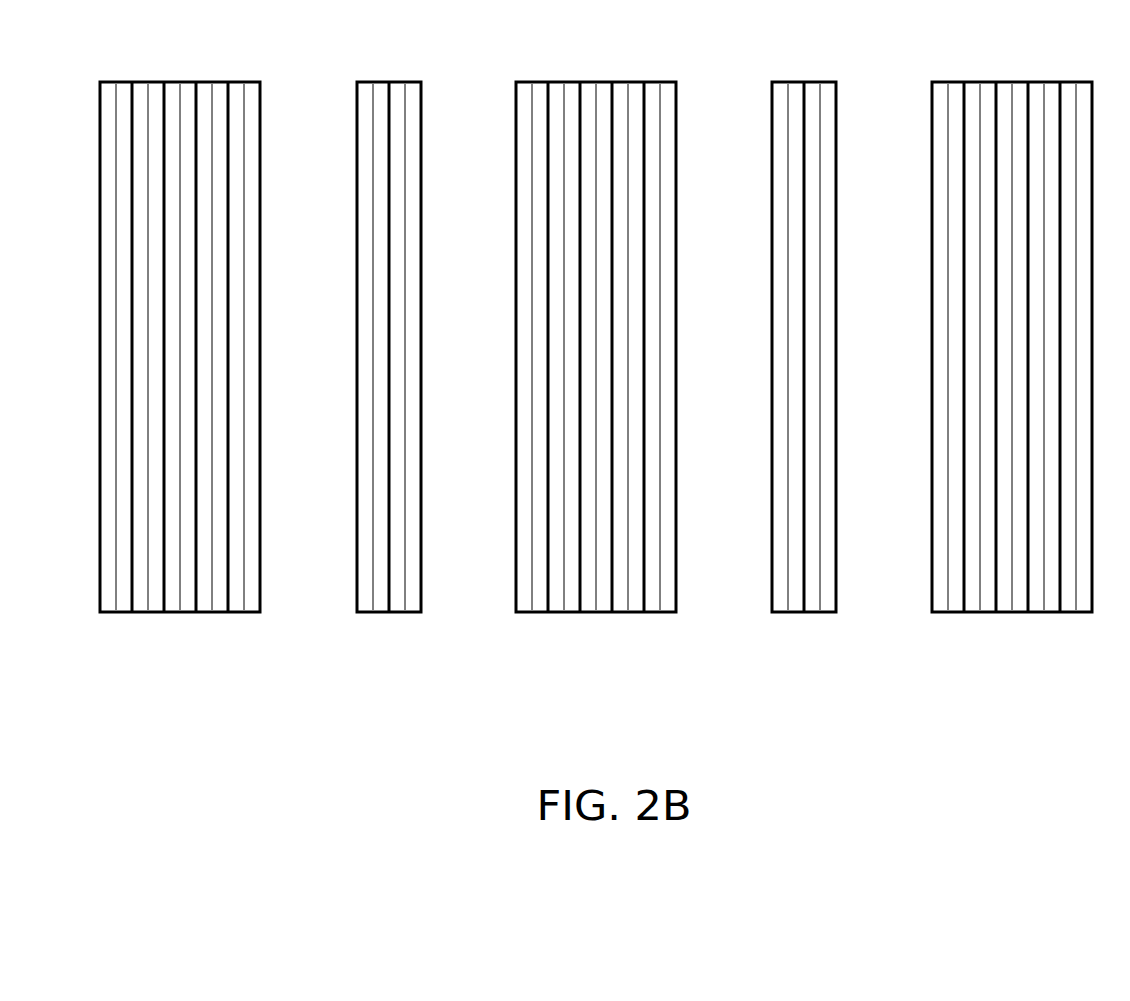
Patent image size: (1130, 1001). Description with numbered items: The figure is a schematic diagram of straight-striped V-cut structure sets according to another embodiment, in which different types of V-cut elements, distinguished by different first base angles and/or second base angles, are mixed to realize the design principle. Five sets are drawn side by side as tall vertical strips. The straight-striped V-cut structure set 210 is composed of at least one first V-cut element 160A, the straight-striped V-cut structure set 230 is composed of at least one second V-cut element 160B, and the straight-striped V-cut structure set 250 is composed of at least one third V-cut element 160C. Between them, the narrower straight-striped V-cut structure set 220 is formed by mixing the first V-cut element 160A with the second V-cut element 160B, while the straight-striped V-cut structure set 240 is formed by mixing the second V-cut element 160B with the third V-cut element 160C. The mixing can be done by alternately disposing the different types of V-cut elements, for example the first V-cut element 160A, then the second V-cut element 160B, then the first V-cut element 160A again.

The straight-striped V-cut structure set 210 is at (100, 72).
The straight-striped V-cut structure set 220 is at (357, 72).
The straight-striped V-cut structure set 230 is at (516, 72).
The straight-striped V-cut structure set 240 is at (772, 72).
The straight-striped V-cut structure set 250 is at (932, 72).
The first V-cut element 160A is at (103, 606).
The second V-cut element 160B is at (410, 606).
The third V-cut element 160C is at (827, 606).